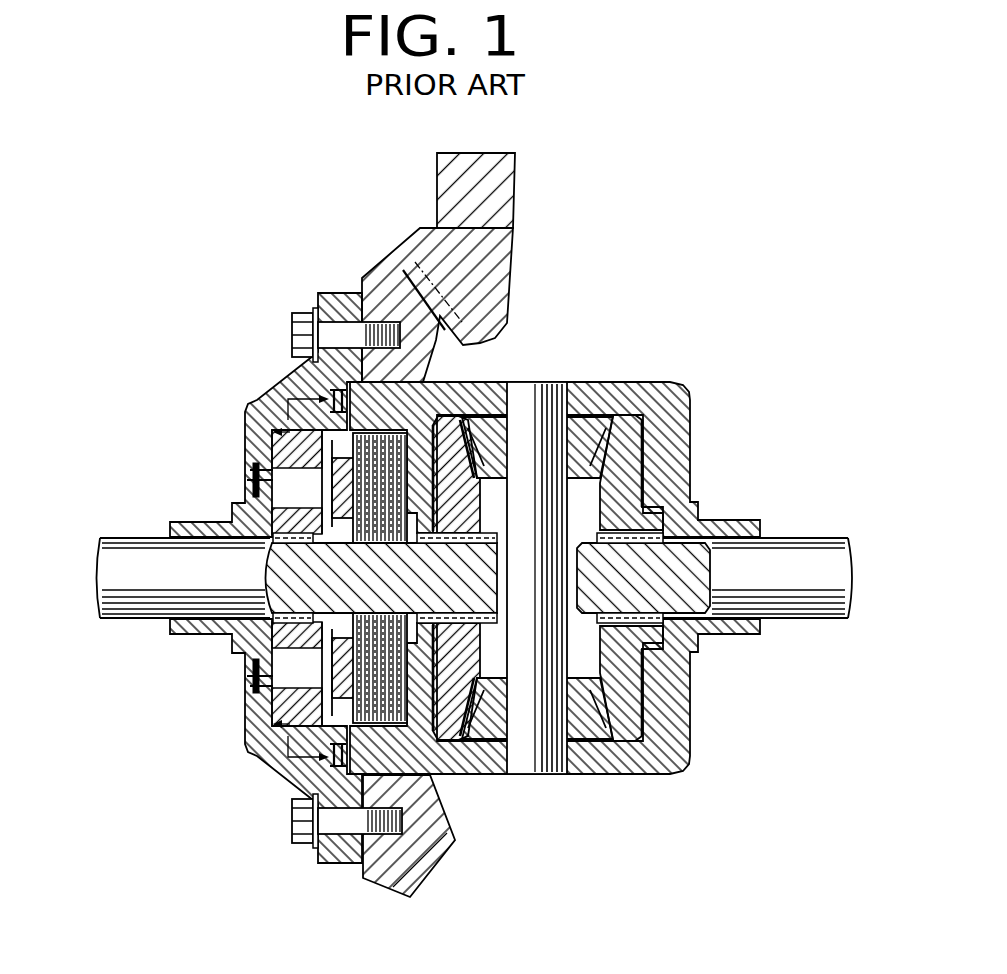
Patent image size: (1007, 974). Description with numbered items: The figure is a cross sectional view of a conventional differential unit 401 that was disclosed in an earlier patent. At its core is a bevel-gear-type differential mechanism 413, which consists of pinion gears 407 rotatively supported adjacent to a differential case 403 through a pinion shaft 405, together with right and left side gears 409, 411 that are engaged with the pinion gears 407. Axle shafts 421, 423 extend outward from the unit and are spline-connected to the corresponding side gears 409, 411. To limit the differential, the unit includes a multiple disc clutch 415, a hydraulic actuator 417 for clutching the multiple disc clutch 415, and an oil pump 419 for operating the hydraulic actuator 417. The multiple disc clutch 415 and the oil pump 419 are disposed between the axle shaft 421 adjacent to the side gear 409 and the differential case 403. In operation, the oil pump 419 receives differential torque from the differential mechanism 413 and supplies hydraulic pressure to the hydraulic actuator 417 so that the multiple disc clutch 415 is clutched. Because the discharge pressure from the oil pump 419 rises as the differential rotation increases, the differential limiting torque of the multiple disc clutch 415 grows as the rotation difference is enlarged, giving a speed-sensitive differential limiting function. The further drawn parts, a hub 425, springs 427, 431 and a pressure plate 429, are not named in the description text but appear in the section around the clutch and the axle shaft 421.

The differential unit 401 is at (667, 259).
The differential case 403 is at (632, 381).
The pinion shaft 405 is at (527, 763).
The pinion gears 407 is at (587, 414).
The left side gear 409 is at (452, 745).
The right side gear 411 is at (625, 755).
The bevel-gear-type differential mechanism 413 is at (546, 320).
The multiple disc clutch 415 is at (374, 426).
The hydraulic actuator 417 is at (305, 335).
The oil pump 419 is at (263, 400).
The axle shaft 421 is at (118, 538).
The axle shaft 423 is at (783, 537).
The hub 425 is at (313, 612).
The spring 427 is at (247, 500).
The pressure plate 429 is at (272, 462).
The spring 431 is at (272, 690).